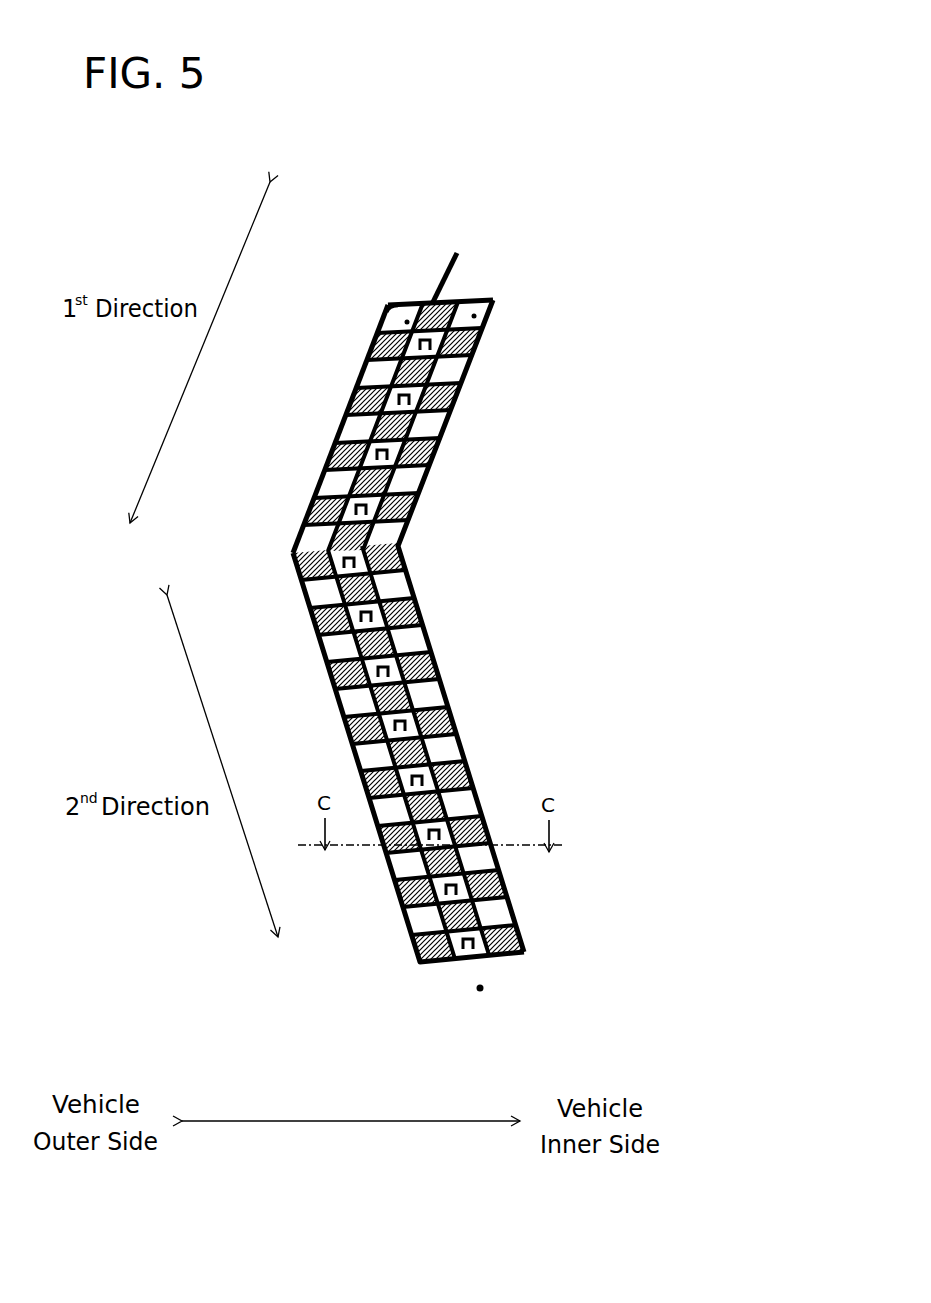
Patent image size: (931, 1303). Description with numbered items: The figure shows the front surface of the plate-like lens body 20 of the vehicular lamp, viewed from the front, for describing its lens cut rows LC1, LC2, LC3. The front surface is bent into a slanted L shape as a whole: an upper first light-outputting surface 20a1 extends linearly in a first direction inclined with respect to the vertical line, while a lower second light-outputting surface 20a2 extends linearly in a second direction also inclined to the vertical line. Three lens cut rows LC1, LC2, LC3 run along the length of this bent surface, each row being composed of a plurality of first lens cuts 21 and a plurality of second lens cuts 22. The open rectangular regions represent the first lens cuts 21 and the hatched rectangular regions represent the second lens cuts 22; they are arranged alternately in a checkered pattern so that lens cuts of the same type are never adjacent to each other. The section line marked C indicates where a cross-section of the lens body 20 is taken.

The lens body 20 is at (432, 612).
The first light-outputting surface 20a1 is at (433, 430).
The second light-outputting surface 20a2 is at (457, 733).
The first lens cut 21 is at (417, 487).
The second lens cut 22 is at (423, 622).
The lens cut row LC1 is at (494, 301).
The lens cut row LC2 is at (433, 300).
The lens cut row LC3 is at (387, 300).